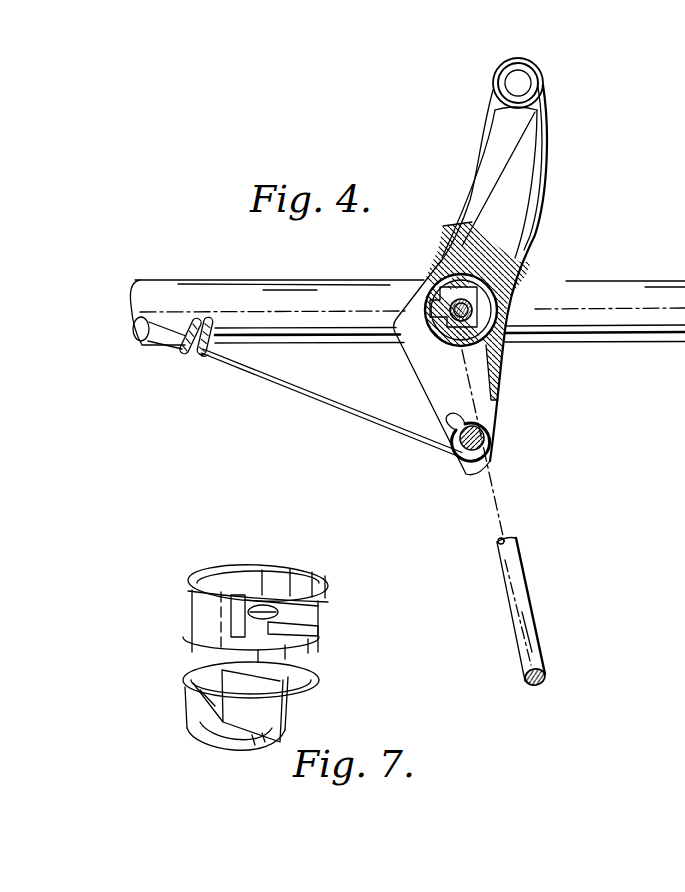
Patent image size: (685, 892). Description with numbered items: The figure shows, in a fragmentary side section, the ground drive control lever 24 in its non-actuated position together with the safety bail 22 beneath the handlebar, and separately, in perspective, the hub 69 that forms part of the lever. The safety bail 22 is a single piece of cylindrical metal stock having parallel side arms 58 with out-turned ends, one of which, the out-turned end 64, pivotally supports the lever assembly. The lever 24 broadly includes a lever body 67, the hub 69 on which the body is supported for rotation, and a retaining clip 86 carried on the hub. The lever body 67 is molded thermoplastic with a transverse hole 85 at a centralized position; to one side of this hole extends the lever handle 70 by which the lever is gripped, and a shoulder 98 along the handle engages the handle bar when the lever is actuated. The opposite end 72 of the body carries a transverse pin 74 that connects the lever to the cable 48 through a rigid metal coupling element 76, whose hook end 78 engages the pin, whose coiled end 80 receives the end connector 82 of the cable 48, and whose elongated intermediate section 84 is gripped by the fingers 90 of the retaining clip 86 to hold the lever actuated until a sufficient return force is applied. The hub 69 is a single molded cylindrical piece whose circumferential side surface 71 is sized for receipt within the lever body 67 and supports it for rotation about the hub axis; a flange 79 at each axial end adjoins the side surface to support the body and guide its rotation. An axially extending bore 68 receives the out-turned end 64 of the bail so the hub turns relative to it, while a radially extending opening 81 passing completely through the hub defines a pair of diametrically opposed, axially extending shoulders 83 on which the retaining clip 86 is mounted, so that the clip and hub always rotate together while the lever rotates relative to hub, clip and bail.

In FIG. 4, the safety bail 22 is at (539, 519).
In FIG. 4, the ground drive control lever 24 is at (566, 207).
In FIG. 4, the cable 48 is at (161, 338).
In FIG. 4, the side arm 58 is at (526, 614).
In FIG. 4, the out-turned end 64 is at (492, 318).
In FIG. 4, the lever body 67 is at (411, 349).
In FIG. 7, the bore 68 is at (241, 598).
In FIG. 4, the hub 69 is at (434, 266).
In FIG. 7, the hub 69 is at (266, 650).
In FIG. 4, the lever handle 70 is at (524, 122).
In FIG. 7, the circumferential side surface 71 is at (206, 652).
In FIG. 4, the opposite end 72 is at (495, 411).
In FIG. 4, the transverse pin 74 is at (467, 460).
In FIG. 4, the coupling element 76 is at (320, 364).
In FIG. 4, the hook end 78 is at (463, 418).
In FIG. 7, the flange 79 is at (263, 566).
In FIG. 4, the coiled end 80 is at (205, 320).
In FIG. 7, the radially extending opening 81 is at (297, 633).
In FIG. 4, the end connector 82 is at (218, 346).
In FIG. 4, the shoulders 83 is at (478, 250).
In FIG. 7, the shoulders 83 is at (207, 622).
In FIG. 4, the elongated intermediate section 84 is at (385, 432).
In FIG. 4, the transverse hole 85 is at (444, 272).
In FIG. 4, the retaining clip 86 is at (488, 298).
In FIG. 4, the fingers 90 is at (440, 330).
In FIG. 4, the shoulder 98 is at (528, 168).